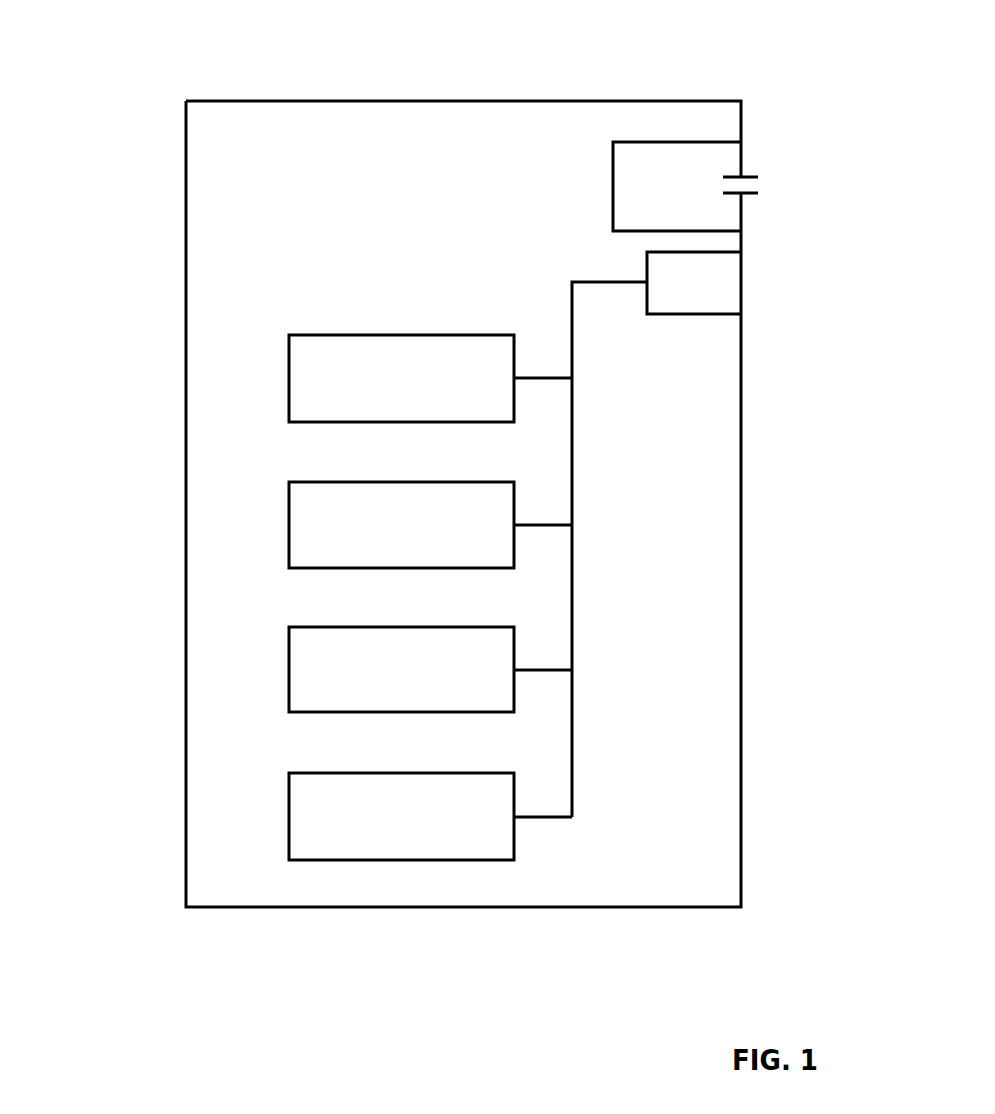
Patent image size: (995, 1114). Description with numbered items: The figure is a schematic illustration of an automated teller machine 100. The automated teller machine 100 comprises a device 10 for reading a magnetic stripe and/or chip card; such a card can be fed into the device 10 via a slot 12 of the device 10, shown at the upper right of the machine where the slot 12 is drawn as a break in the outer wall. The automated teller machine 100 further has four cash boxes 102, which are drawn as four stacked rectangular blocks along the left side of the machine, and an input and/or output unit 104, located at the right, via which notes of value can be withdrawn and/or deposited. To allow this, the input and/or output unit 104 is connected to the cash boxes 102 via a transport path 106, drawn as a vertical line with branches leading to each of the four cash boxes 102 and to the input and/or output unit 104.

The automated teller machine 100 is at (118, 73).
The device for reading a magnetic stripe and/or chip card 10 is at (793, 186).
The slot 12 is at (754, 187).
The input and/or output unit 104 is at (728, 279).
The transport path 106 is at (573, 461).
The cash boxes 102 is at (289, 378).